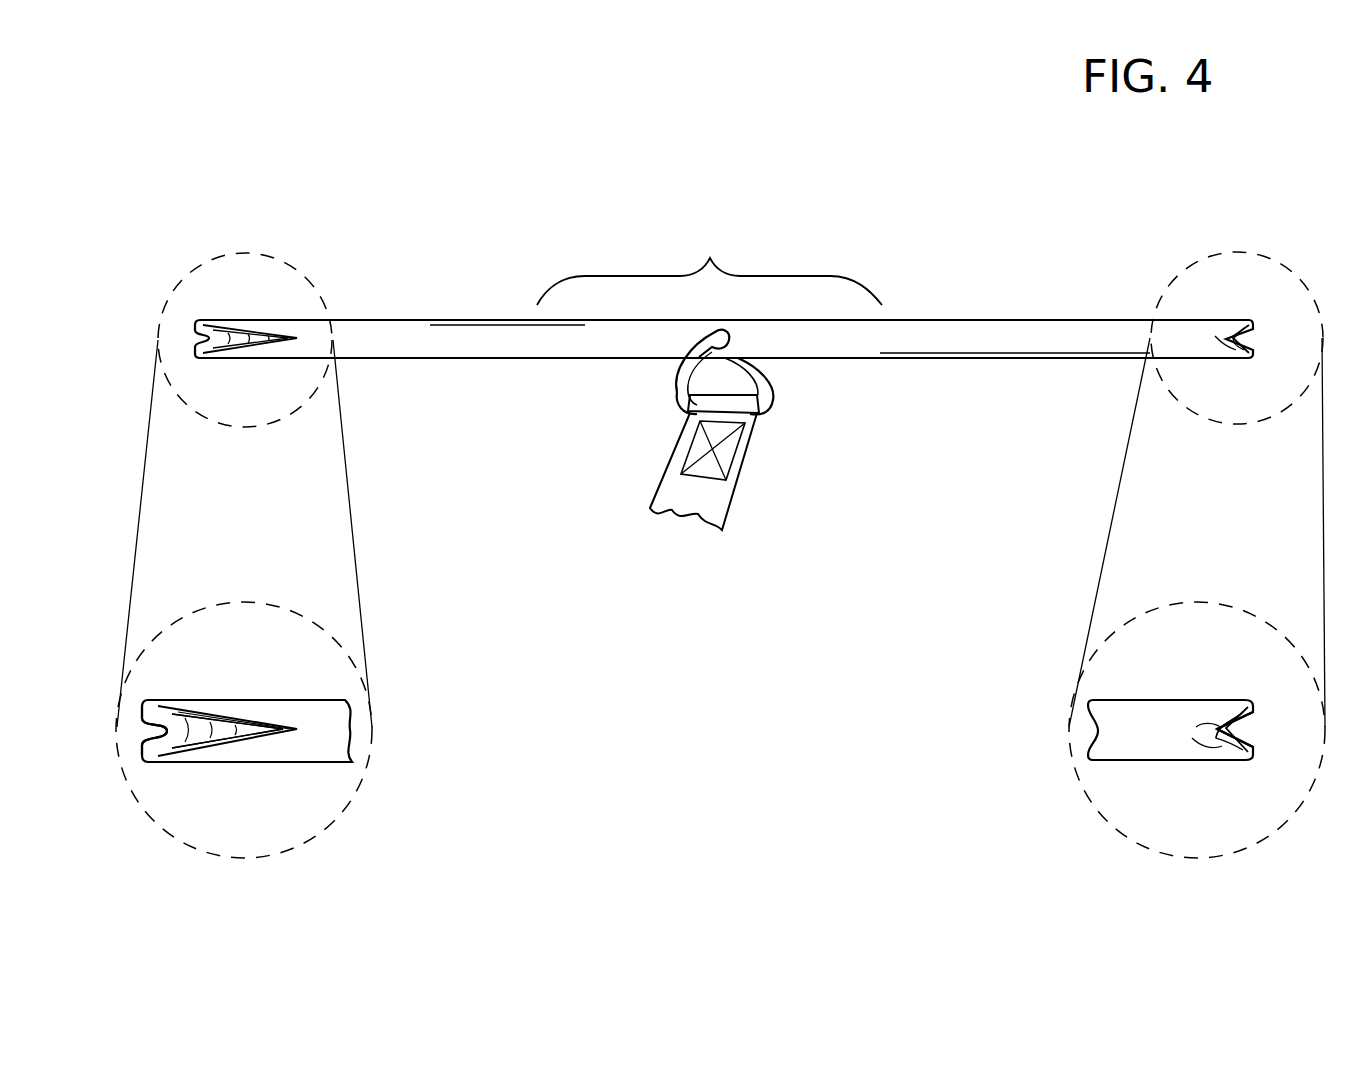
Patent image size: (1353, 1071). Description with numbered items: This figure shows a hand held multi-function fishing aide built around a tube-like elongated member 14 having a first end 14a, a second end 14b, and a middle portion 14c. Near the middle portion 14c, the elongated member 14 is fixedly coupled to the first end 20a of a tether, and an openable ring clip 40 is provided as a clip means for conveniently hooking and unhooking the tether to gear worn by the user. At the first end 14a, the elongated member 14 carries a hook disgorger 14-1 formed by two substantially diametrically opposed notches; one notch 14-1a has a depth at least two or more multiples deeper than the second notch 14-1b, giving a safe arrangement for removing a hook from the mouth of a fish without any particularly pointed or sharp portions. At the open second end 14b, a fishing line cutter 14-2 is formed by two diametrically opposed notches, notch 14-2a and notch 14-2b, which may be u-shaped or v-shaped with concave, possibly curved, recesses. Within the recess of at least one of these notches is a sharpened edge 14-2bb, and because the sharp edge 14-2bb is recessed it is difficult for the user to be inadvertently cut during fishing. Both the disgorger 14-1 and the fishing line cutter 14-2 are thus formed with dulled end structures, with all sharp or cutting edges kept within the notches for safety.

The elongated member 14 is at (953, 333).
The first end 14a is at (345, 333).
The second end 14b is at (1140, 331).
The middle portion 14c is at (709, 267).
The hook disgorger 14-1 is at (205, 227).
The notch 14-1a is at (258, 729).
The second notch 14-1b is at (153, 728).
The fishing line cutter 14-2 is at (1260, 223).
The notch 14-2a is at (1292, 693).
The notch 14-2b is at (1248, 742).
The sharp edge 14-2bb is at (1217, 722).
The openable ring clip 40 is at (772, 383).
The first end of the tether 20a is at (715, 500).